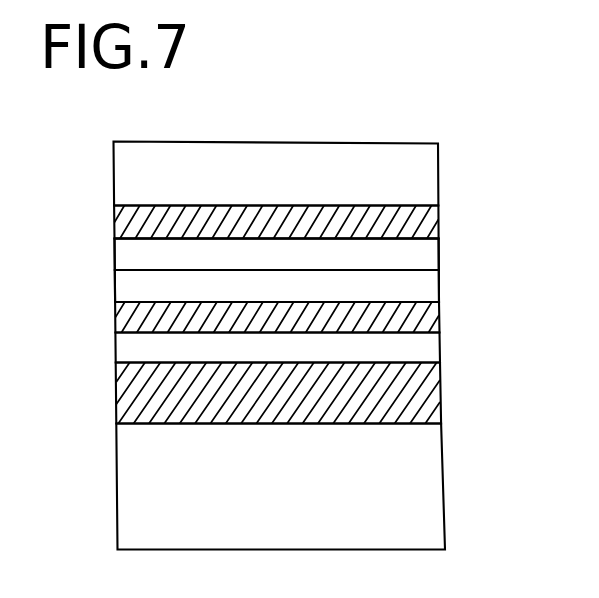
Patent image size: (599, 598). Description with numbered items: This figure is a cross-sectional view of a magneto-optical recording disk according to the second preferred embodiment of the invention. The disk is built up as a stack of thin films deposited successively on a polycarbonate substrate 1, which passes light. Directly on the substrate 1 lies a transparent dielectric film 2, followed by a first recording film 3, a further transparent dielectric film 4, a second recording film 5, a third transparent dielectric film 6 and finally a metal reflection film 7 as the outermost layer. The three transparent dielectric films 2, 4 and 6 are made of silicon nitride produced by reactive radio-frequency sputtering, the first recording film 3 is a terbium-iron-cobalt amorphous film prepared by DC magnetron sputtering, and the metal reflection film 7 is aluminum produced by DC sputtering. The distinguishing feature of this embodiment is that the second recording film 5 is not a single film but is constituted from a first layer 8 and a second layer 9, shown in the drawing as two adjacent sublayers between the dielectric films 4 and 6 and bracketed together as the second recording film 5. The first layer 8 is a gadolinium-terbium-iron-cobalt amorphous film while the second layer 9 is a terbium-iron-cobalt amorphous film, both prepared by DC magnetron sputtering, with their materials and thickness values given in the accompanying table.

The polycarbonate substrate 1 is at (424, 466).
The transparent dielectric film 2 is at (433, 398).
The first recording film 3 is at (430, 349).
The transparent dielectric film 4 is at (433, 322).
The second recording film 5 is at (538, 238).
The transparent dielectric film 6 is at (433, 226).
The metal reflection film 7 is at (424, 171).
The first layer 8 is at (424, 287).
The second layer 9 is at (424, 256).